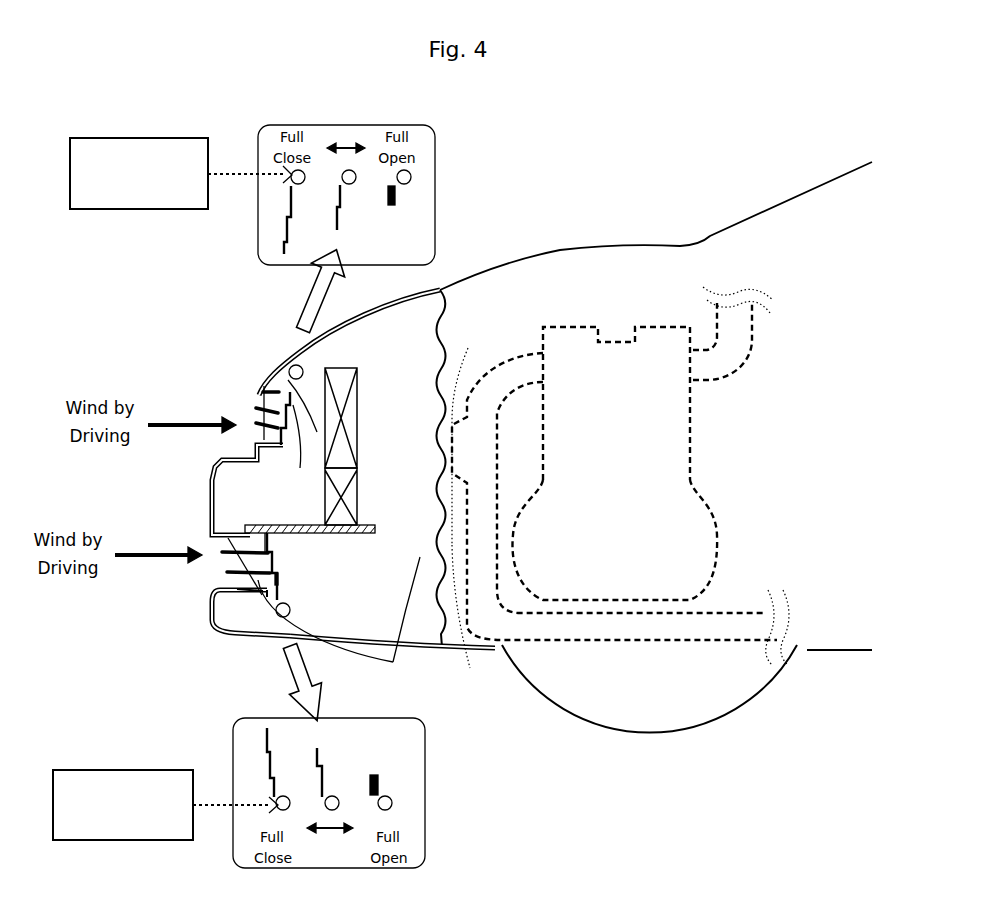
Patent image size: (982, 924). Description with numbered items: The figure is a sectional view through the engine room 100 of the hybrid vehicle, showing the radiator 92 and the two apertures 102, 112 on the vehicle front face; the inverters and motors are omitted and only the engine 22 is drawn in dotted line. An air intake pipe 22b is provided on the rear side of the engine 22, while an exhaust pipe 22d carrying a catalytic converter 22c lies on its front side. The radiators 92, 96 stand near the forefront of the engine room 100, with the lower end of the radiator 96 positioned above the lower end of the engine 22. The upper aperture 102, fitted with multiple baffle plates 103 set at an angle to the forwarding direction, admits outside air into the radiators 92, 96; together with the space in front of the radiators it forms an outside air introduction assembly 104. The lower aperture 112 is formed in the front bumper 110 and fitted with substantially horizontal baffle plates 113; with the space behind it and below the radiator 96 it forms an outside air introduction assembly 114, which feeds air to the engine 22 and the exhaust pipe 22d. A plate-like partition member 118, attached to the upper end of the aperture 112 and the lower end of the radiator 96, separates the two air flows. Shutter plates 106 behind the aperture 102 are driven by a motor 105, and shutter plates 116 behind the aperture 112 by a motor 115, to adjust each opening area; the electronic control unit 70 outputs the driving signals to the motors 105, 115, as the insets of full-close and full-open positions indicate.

The engine room 100 is at (547, 234).
The engine 22 is at (585, 324).
The air intake pipe 22b is at (730, 370).
The catalytic converter 22c is at (465, 468).
The exhaust pipe 22d is at (473, 620).
The radiator 92 is at (357, 413).
The radiator 96 is at (357, 498).
The aperture 102 is at (258, 391).
The baffle plates 103 is at (258, 423).
The outside air introduction assembly 104 is at (272, 390).
The motor 105 is at (303, 363).
The shutter plates 106 is at (452, 205).
The front bumper 110 is at (210, 484).
The aperture 112 is at (258, 580).
The baffle plates 113 is at (238, 558).
The outside air introduction assembly 114 is at (376, 624).
The motor 115 is at (292, 611).
The shutter plates 116 is at (273, 573).
The partition member 118 is at (312, 535).
The electronic control unit 70 is at (172, 489).